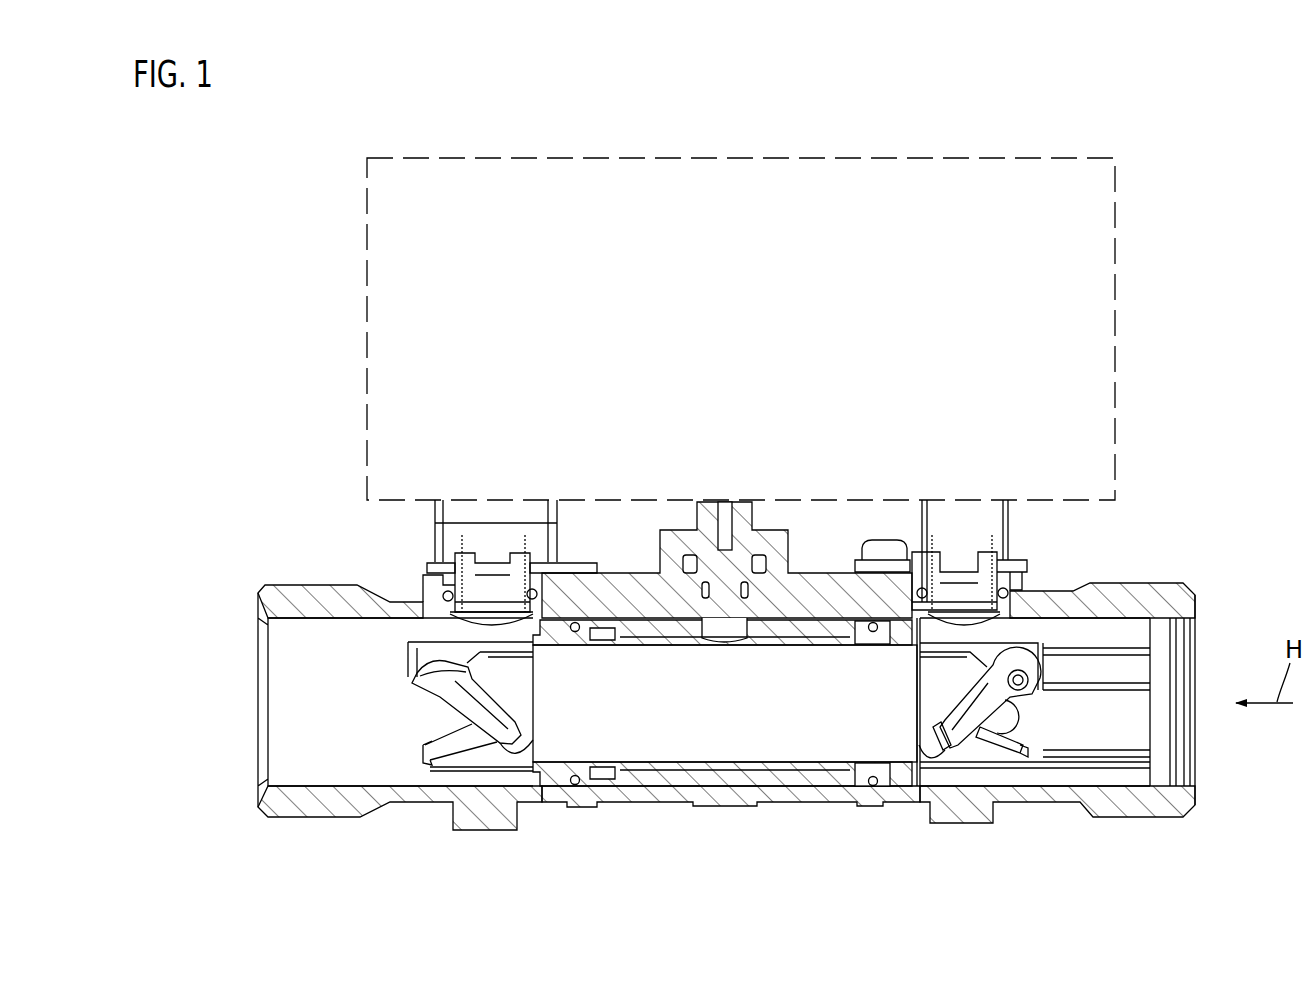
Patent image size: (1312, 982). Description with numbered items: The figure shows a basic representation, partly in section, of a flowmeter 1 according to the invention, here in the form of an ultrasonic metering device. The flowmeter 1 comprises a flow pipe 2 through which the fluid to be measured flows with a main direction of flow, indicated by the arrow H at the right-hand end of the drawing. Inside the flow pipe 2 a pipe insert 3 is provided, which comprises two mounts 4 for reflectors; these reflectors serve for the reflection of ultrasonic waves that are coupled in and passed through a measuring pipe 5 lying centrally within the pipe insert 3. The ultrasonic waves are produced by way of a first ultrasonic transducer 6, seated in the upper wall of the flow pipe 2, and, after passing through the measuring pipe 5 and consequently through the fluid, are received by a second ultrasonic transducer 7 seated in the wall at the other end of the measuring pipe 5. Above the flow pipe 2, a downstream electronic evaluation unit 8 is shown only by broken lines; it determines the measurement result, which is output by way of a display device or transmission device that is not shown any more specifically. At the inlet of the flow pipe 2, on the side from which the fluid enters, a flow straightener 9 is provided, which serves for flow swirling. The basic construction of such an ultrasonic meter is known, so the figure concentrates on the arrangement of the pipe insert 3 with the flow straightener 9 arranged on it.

The flowmeter 1 is at (1165, 130).
The flow pipe 2 is at (1157, 585).
The pipe insert 3 is at (838, 790).
The mount 4 is at (435, 699).
The measuring pipe 5 is at (557, 743).
The first ultrasonic transducer 6 is at (980, 605).
The second ultrasonic transducer 7 is at (475, 605).
The electronic evaluation unit 8 is at (901, 193).
The flow straightener 9 is at (1157, 640).